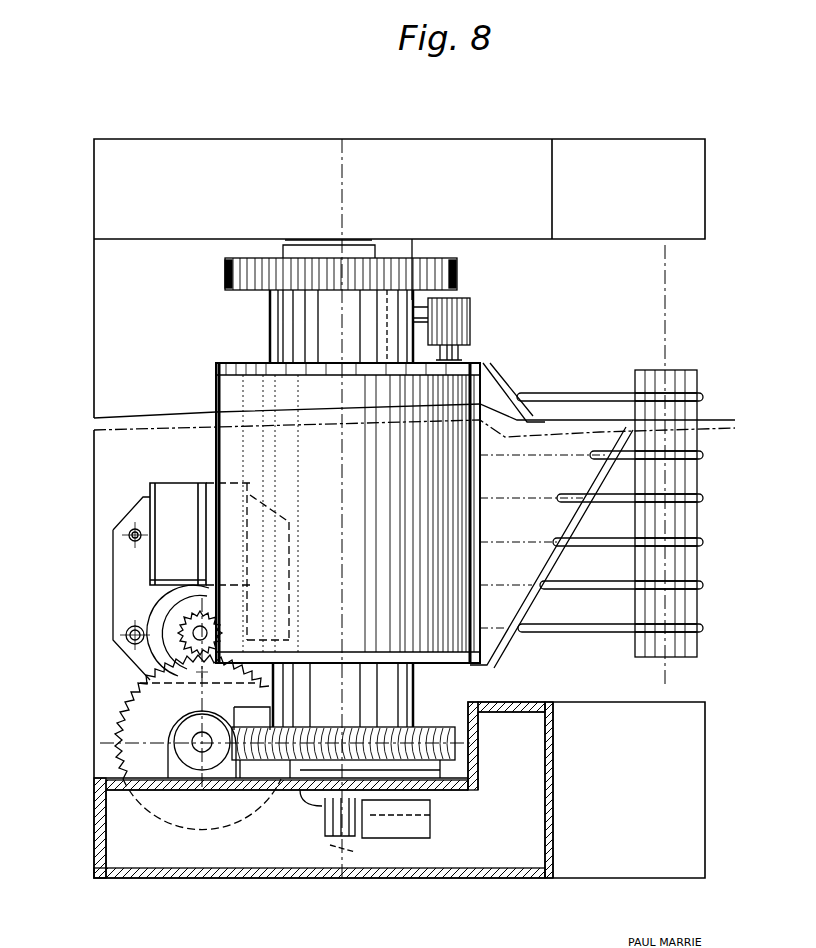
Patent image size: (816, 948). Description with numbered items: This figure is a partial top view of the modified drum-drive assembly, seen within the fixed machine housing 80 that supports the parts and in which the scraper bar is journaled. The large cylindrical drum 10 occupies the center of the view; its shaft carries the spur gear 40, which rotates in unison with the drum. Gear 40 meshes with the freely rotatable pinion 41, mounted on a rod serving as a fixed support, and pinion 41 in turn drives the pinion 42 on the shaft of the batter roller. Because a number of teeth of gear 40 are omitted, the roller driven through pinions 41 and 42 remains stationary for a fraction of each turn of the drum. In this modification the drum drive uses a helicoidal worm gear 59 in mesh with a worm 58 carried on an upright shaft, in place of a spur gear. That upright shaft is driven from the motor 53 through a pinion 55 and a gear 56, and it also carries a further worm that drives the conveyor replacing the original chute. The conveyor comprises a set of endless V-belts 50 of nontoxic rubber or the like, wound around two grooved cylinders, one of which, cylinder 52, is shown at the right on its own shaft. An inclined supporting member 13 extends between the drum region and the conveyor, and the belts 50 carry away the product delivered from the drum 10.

The drum 10 is at (215, 386).
The support bracket 13 is at (506, 648).
The spur gear 40 is at (460, 276).
The pinion 41 is at (470, 312).
The pinion 42 is at (470, 333).
The endless V-belts 50 is at (598, 395).
The grooved cylinder 52 is at (677, 378).
The motor 53 is at (176, 497).
The pinion 55 is at (190, 612).
The gear 56 is at (240, 768).
The worm 58 is at (178, 736).
The helicoidal worm gear 59 is at (455, 757).
The machine housing 80 is at (100, 440).